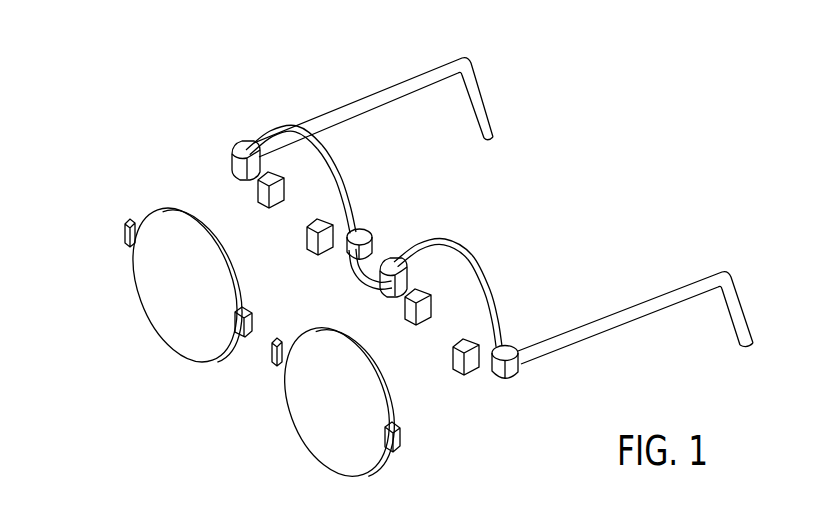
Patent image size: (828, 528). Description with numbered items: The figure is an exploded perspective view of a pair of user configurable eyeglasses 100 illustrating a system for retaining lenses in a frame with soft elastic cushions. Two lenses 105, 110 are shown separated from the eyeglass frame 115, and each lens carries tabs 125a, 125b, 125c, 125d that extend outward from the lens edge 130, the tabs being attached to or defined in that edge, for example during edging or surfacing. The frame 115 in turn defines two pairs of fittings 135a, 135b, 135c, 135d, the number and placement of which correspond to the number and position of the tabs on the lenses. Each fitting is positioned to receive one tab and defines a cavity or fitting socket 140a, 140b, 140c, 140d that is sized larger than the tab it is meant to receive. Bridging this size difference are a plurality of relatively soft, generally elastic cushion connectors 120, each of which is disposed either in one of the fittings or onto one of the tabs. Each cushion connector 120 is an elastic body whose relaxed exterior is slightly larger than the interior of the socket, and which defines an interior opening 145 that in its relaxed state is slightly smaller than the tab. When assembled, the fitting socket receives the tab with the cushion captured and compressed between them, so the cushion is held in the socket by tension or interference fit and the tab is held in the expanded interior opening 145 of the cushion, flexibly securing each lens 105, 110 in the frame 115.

The eyeglasses 100 is at (585, 97).
The lens 105 is at (143, 303).
The lens 110 is at (290, 437).
The eyeglass frame 115 is at (205, 136).
The elastic cushion connector 120 is at (307, 240).
The tab 125a is at (125, 238).
The tab 125b is at (238, 328).
The tab 125c is at (275, 355).
The tab 125d is at (400, 445).
The lens edge 130 is at (240, 290).
The fitting 135a is at (235, 170).
The fitting 135b is at (364, 226).
The fitting 135c is at (397, 256).
The fitting 135d is at (525, 357).
The fitting socket 140a is at (318, 146).
The fitting socket 140b is at (345, 249).
The fitting socket 140c is at (417, 274).
The fitting socket 140d is at (488, 371).
The interior opening 145 is at (285, 196).